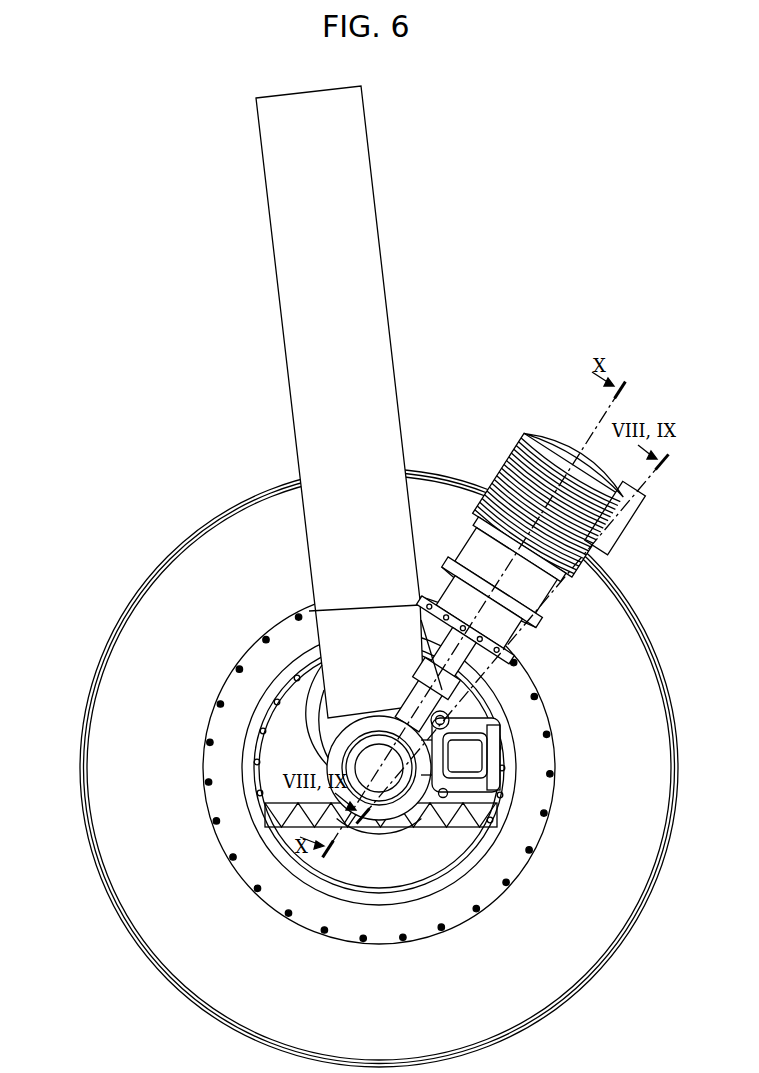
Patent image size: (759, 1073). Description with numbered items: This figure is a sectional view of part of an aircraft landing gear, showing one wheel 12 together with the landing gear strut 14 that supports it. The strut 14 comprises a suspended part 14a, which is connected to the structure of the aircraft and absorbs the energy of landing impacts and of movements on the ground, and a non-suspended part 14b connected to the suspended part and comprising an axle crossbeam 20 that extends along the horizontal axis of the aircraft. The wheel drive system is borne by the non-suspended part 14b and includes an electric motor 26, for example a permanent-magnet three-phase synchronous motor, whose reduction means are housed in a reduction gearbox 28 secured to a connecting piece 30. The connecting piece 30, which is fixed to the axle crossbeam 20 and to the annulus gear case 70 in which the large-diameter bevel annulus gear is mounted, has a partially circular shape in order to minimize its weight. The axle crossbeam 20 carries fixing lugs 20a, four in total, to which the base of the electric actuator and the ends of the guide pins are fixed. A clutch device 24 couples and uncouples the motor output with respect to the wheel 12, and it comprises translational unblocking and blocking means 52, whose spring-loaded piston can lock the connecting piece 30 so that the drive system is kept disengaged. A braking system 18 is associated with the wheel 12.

The wheel 12 is at (220, 546).
The landing gear strut 14 is at (282, 359).
The suspended part 14a is at (323, 255).
The non-suspended part 14b is at (350, 660).
The braking system 18 is at (370, 863).
The axle crossbeam 20 is at (377, 768).
The fixing lug 20a is at (468, 712).
The clutch device 24 is at (524, 747).
The electric motor 26 is at (522, 490).
The reduction gearbox 28 is at (530, 598).
The connecting piece 30 is at (282, 768).
The translational unblocking and blocking means 52 is at (433, 603).
The annulus gear case 70 is at (212, 820).